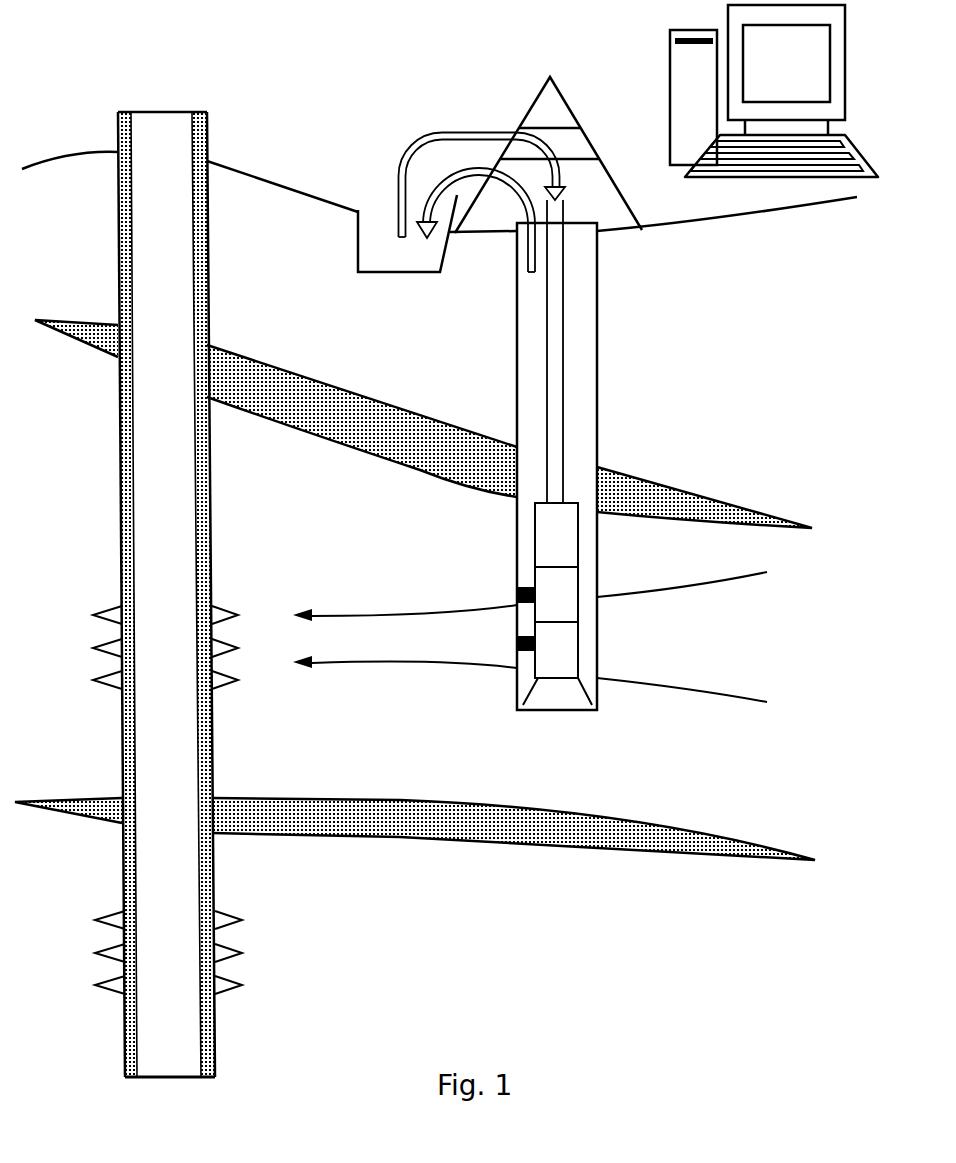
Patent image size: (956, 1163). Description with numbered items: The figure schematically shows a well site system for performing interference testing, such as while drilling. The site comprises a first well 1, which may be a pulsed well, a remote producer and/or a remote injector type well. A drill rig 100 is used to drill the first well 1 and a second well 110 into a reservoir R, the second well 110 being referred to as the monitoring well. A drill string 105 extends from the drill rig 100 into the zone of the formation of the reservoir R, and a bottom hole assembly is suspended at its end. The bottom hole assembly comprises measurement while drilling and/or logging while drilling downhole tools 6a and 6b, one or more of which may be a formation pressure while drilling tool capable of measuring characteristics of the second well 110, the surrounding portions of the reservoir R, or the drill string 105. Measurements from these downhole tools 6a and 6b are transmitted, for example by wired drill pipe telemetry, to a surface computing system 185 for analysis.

The first well 1 is at (207, 255).
The reservoir R is at (309, 353).
The drill rig 100 is at (533, 95).
The drill string 105 is at (568, 357).
The second well 110 is at (513, 328).
The downhole tool 6a is at (575, 574).
The downhole tool 6b is at (573, 662).
The surface computing system 185 is at (668, 57).